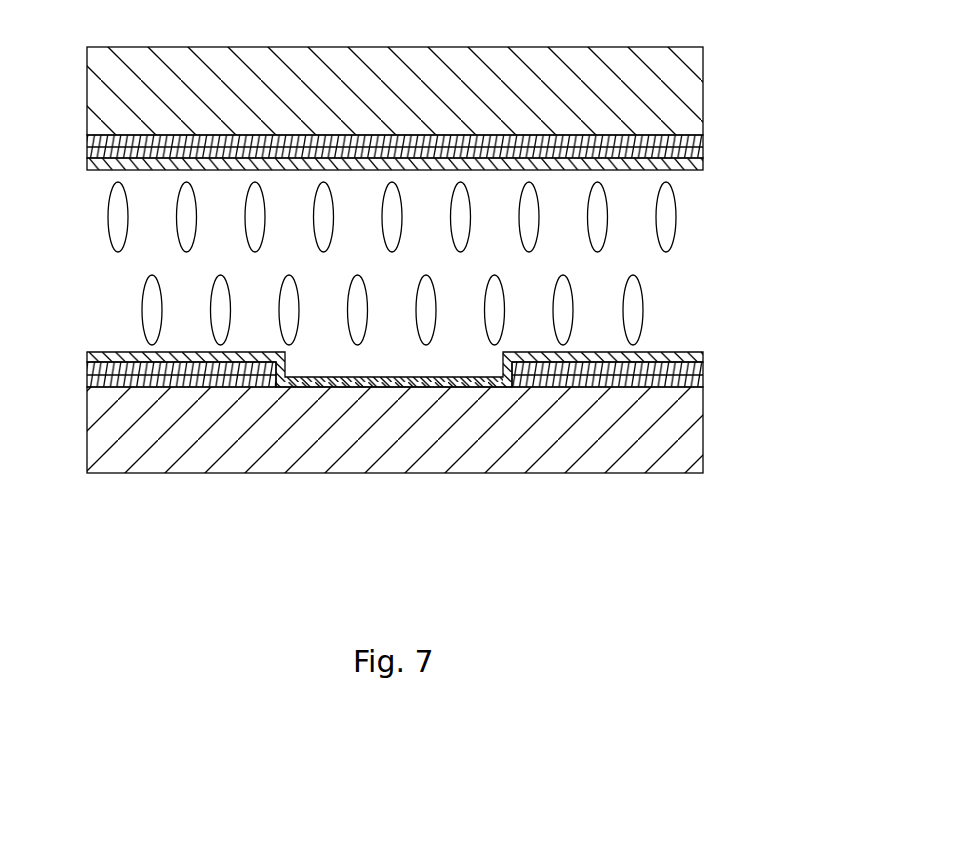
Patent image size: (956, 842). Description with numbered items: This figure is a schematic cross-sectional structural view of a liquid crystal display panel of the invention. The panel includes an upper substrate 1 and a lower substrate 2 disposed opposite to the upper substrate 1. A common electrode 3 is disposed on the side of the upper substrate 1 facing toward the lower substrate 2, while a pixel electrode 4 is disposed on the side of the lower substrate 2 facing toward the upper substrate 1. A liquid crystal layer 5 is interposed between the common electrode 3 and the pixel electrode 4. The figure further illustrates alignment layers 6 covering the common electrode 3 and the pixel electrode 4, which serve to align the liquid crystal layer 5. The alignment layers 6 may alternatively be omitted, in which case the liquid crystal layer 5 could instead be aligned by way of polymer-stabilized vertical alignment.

The upper substrate 1 is at (676, 102).
The lower substrate 2 is at (620, 440).
The common electrode 3 is at (670, 151).
The pixel electrode 4 is at (655, 372).
The liquid crystal layer 5 is at (597, 219).
The alignment layers 6 is at (97, 168).